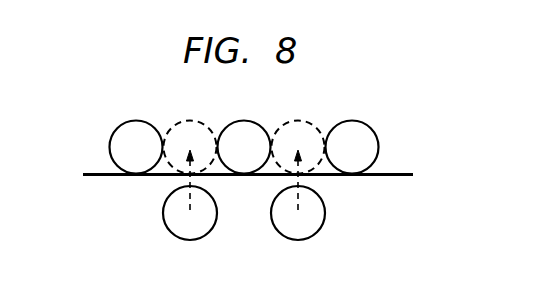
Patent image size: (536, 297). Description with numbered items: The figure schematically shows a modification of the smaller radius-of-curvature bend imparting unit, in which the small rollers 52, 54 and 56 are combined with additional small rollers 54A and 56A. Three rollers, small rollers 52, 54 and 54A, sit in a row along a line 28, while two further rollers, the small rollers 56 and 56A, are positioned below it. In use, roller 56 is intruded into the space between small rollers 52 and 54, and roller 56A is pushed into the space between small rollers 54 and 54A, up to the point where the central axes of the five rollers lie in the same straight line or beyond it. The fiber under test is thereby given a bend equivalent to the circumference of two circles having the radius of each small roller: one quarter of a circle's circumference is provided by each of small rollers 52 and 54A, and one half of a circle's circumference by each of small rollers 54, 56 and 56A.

The platen / support surface 28 is at (388, 177).
The small roller 52 is at (131, 121).
The small roller 54 is at (250, 122).
The additional small roller 54A is at (368, 122).
The small roller 56 is at (165, 219).
The additional small roller 56A is at (324, 220).